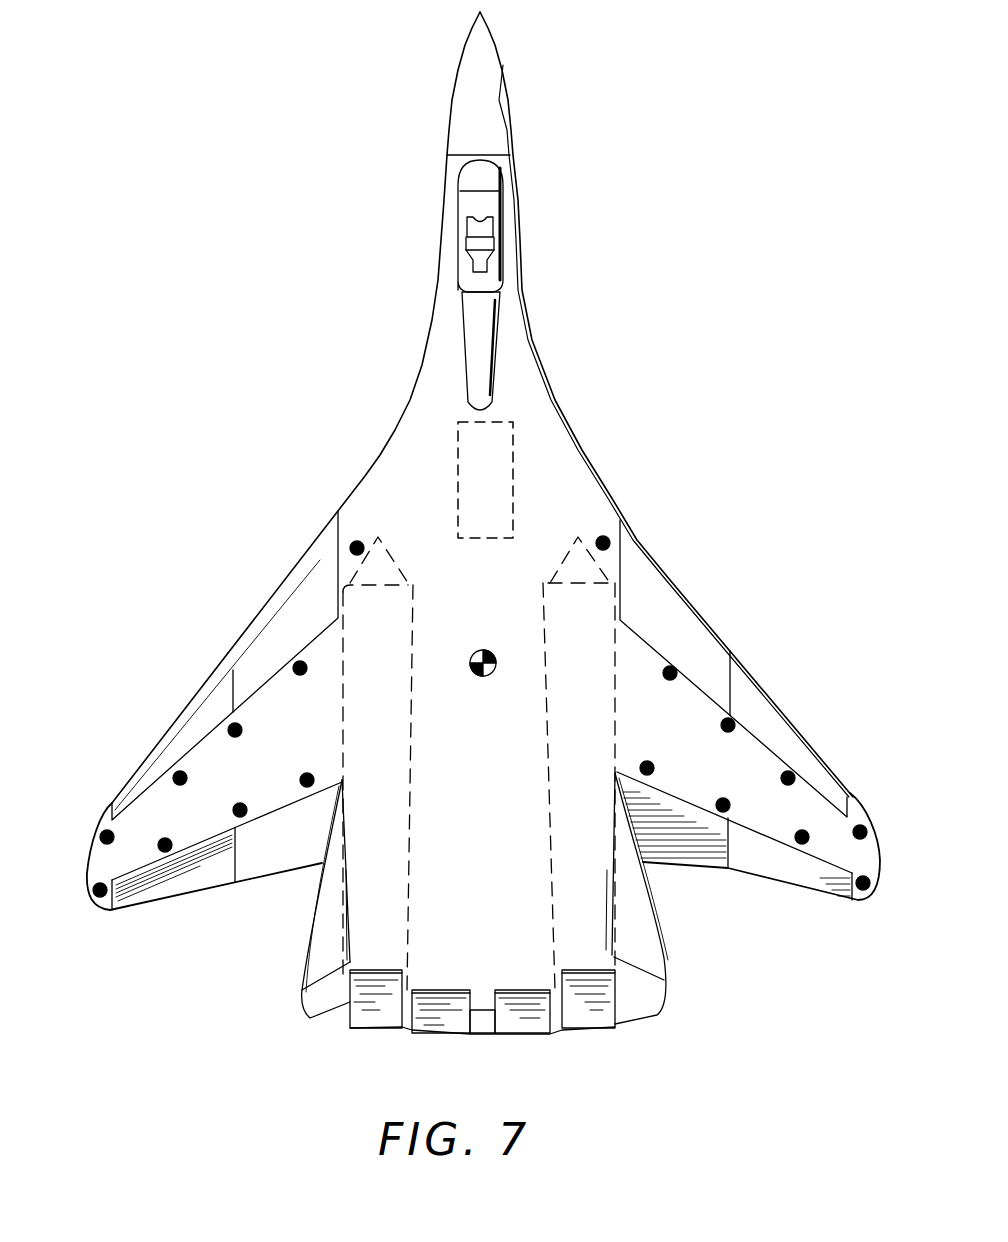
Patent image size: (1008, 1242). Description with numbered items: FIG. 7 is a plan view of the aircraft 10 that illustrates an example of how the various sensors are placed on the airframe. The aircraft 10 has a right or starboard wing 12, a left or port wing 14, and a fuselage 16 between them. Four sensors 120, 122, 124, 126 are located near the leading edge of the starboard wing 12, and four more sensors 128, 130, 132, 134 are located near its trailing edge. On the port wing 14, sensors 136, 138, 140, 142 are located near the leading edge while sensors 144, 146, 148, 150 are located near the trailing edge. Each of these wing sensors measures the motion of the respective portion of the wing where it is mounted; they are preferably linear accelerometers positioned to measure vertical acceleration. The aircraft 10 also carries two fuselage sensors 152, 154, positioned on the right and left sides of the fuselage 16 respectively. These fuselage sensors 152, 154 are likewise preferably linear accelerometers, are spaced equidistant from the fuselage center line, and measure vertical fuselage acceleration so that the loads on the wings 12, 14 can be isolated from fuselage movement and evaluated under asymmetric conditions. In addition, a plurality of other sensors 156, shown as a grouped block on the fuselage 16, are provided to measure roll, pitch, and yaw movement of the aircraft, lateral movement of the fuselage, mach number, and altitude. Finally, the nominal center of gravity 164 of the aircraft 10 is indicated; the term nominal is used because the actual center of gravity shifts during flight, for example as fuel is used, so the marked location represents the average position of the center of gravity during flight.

The aircraft 10 is at (590, 228).
The wing 12 is at (737, 753).
The wing 14 is at (292, 710).
The fuselage 16 is at (513, 340).
The sensor 120 is at (672, 666).
The sensor 122 is at (733, 718).
The sensor 124 is at (795, 774).
The sensor 126 is at (877, 828).
The sensor 128 is at (647, 775).
The sensor 130 is at (725, 815).
The sensor 132 is at (801, 847).
The sensor 134 is at (858, 890).
The sensor 136 is at (103, 837).
The sensor 138 is at (177, 778).
The sensor 140 is at (230, 728).
The sensor 142 is at (295, 668).
The sensor 144 is at (102, 898).
The sensor 146 is at (166, 852).
The sensor 148 is at (240, 817).
The sensor 150 is at (308, 788).
The fuselage sensor 152 is at (607, 539).
The fuselage sensor 154 is at (357, 548).
The other sensors 156 is at (513, 465).
The nominal c.g. 164 is at (485, 650).